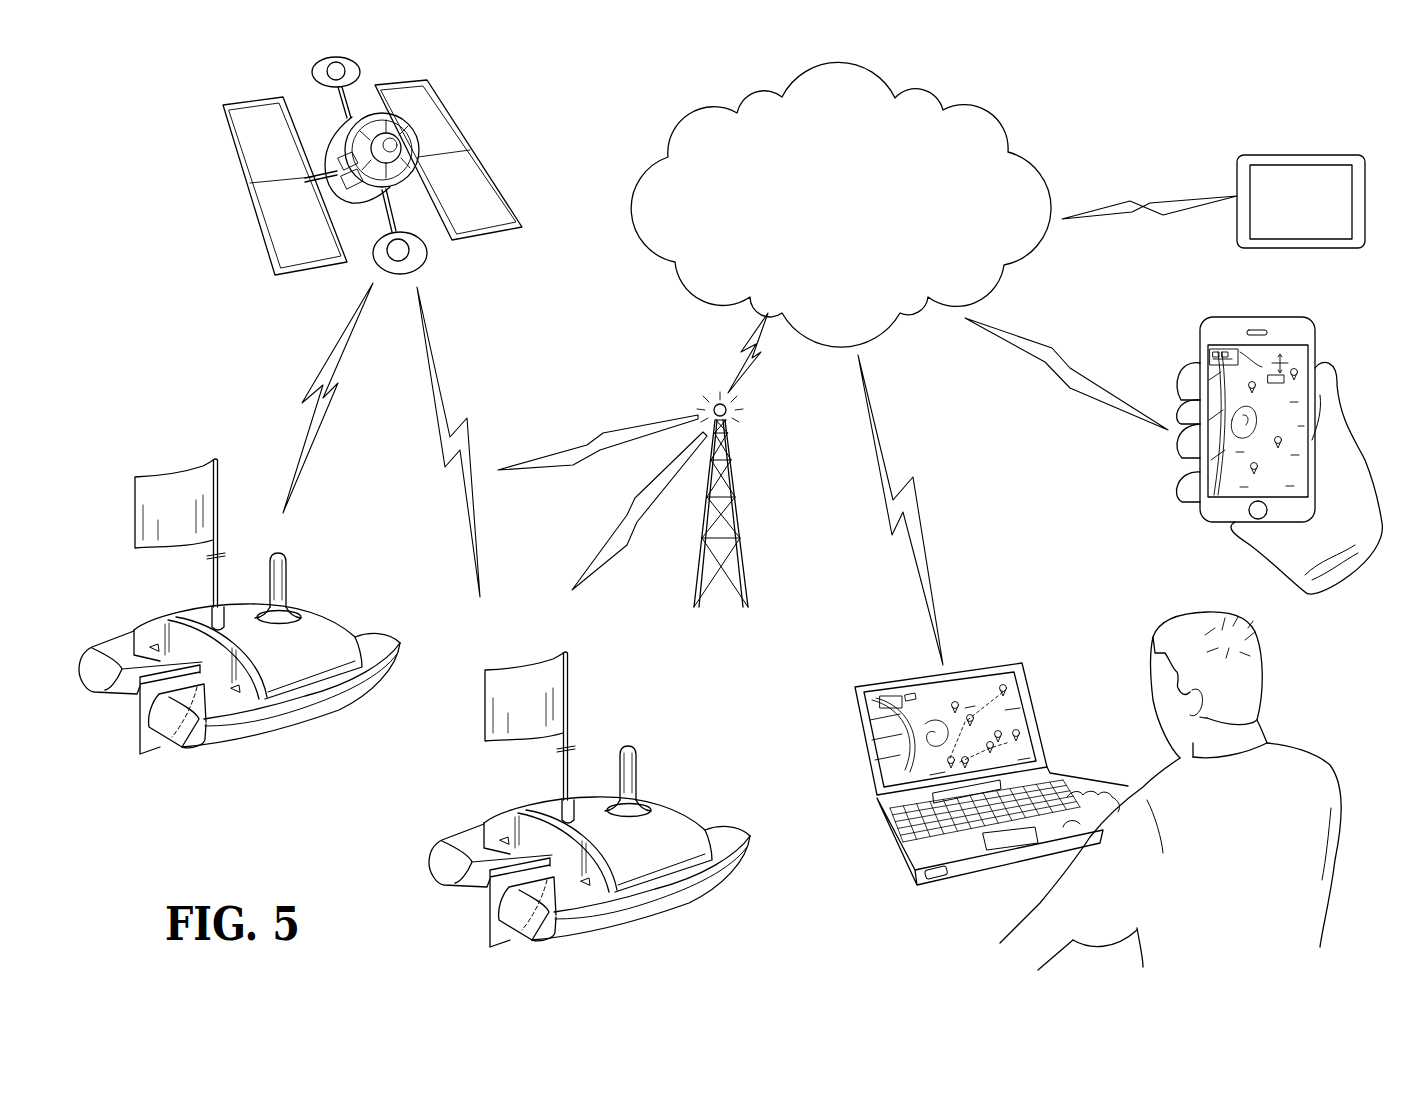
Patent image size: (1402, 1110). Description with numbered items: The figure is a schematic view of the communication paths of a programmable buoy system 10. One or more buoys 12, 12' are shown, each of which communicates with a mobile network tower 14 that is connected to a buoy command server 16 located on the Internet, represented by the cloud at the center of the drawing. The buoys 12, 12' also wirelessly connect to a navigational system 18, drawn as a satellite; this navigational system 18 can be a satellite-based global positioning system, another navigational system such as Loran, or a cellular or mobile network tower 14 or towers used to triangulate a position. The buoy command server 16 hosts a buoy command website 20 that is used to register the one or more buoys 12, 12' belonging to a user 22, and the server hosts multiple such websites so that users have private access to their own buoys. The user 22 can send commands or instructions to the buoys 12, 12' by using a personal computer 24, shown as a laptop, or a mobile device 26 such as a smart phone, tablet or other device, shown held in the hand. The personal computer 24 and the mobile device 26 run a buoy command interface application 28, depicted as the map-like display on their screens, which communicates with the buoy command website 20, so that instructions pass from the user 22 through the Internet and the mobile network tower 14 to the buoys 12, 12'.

The programmable buoy system 10 is at (1031, 110).
The buoy 12 is at (589, 815).
The buoy 12' is at (239, 622).
The mobile network tower 14 is at (743, 518).
The buoy command server 16 is at (1270, 158).
The navigational system 18 is at (485, 142).
The buoy command website 20 is at (1310, 221).
The user 22 is at (1353, 463).
The personal computer 24 is at (988, 659).
The mobile device 26 is at (1225, 335).
The buoy command interface application 28 is at (1015, 720).